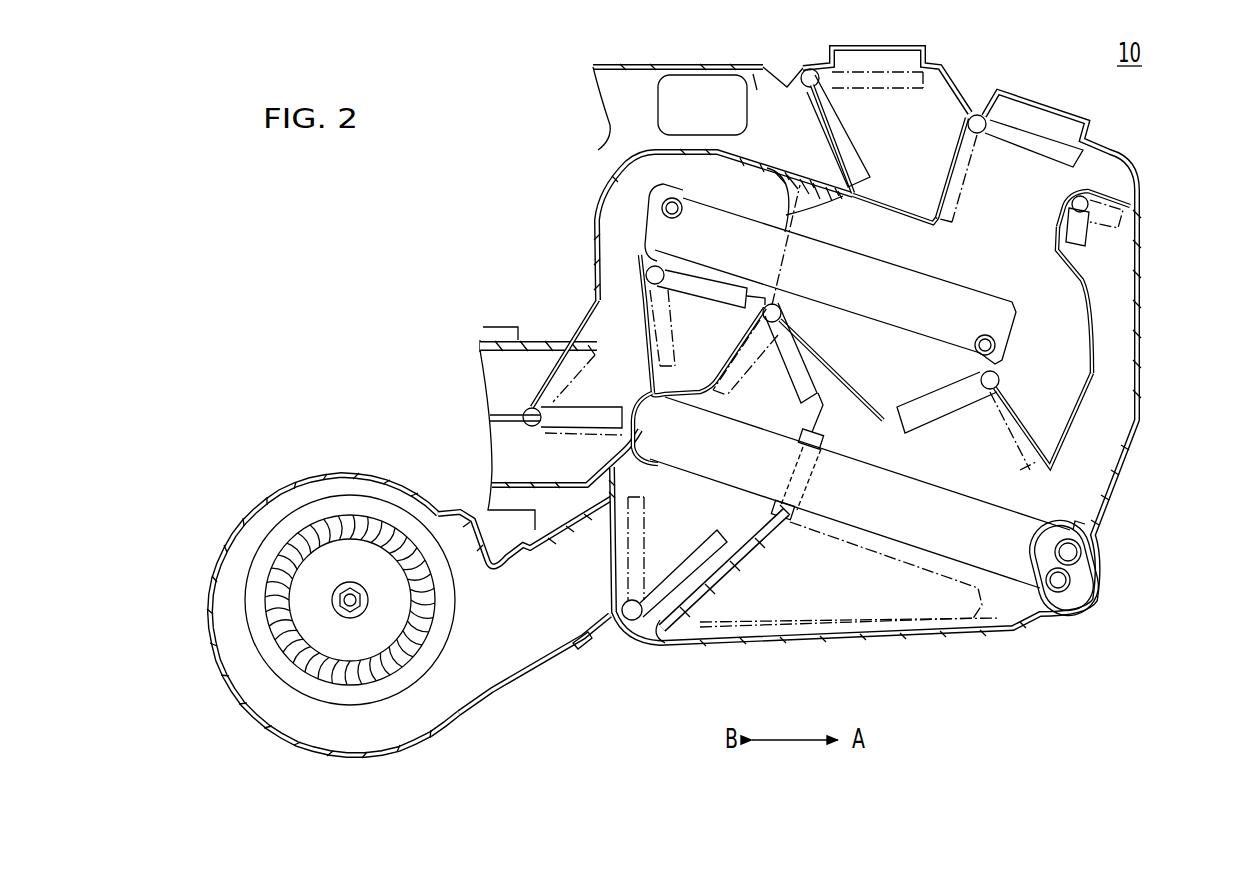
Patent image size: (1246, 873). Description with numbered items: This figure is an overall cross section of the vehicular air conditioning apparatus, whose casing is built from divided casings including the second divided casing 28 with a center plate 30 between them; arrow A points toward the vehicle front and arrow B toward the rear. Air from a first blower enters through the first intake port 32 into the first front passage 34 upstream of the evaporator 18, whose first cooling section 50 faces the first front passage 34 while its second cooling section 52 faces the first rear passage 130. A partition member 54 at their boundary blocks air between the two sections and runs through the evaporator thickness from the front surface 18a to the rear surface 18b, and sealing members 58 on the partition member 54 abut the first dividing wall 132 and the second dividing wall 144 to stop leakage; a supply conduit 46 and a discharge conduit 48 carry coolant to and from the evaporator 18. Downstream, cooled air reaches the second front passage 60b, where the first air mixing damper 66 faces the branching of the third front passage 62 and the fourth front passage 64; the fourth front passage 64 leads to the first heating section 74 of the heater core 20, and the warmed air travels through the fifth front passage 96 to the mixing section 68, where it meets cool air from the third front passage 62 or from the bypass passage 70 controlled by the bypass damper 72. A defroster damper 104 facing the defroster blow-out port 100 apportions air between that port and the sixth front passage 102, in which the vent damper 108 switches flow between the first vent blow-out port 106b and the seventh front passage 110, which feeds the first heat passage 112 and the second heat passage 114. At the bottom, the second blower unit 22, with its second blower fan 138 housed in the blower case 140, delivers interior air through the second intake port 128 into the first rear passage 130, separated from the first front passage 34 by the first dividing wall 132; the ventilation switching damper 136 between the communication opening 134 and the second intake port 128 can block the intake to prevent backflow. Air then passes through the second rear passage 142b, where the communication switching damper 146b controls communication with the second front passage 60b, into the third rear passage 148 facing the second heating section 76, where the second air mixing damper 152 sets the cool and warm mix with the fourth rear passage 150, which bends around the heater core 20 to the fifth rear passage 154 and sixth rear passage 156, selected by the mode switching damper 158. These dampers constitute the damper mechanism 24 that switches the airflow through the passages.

The evaporator 18 is at (867, 509).
The front surface 18a is at (930, 586).
The rear surface 18b is at (1040, 525).
The heater core 20 is at (830, 269).
The second blower unit 22 is at (409, 602).
The damper mechanism 24 is at (695, 271).
The second divided casing 28 is at (1145, 382).
The center plate 30 is at (1070, 311).
The first intake port 32 is at (826, 646).
The first front passage 34 is at (882, 630).
The supply conduit 46 is at (1075, 553).
The discharge conduit 48 is at (1062, 583).
The first cooling section 50 is at (880, 477).
The second cooling section 52 is at (668, 413).
The partition member 54 is at (815, 490).
The sealing member 58 is at (826, 443).
The second front passage 60b is at (1075, 447).
The third front passage 62 is at (1085, 405).
The fourth front passage 64 is at (885, 332).
The first air mixing damper 66 is at (940, 410).
The mixing section 68 is at (1027, 276).
The bypass passage 70 is at (1115, 345).
The bypass damper 72 is at (1077, 226).
The first heating section 74 is at (955, 305).
The second heating section 76 is at (730, 226).
The fifth front passage 96 is at (880, 216).
The defroster blow-out port 100 is at (1050, 117).
The sixth front passage 102 is at (940, 110).
The defroster damper 104 is at (1007, 135).
The first vent blow-out port 106b is at (897, 58).
The vent damper 108 is at (843, 128).
The seventh front passage 110 is at (755, 74).
The first heat passage 112 is at (678, 96).
The second heat passage 114 is at (667, 89).
The second intake port 128 is at (579, 648).
The first rear passage 130 is at (737, 506).
The first dividing wall 132 is at (772, 520).
The communication opening 134 is at (680, 597).
The ventilation switching damper 136 is at (685, 572).
The second blower fan 138 is at (413, 643).
The blower case 140 is at (286, 483).
The second rear passage 142b is at (752, 400).
The second dividing wall 144 is at (760, 290).
The communication switching damper 146b is at (794, 370).
The third rear passage 148 is at (600, 328).
The fourth rear passage 150 is at (627, 210).
The second air mixing damper 152 is at (698, 292).
The fifth rear passage 154 is at (494, 445).
The sixth rear passage 156 is at (494, 380).
The mode switching damper 158 is at (575, 418).